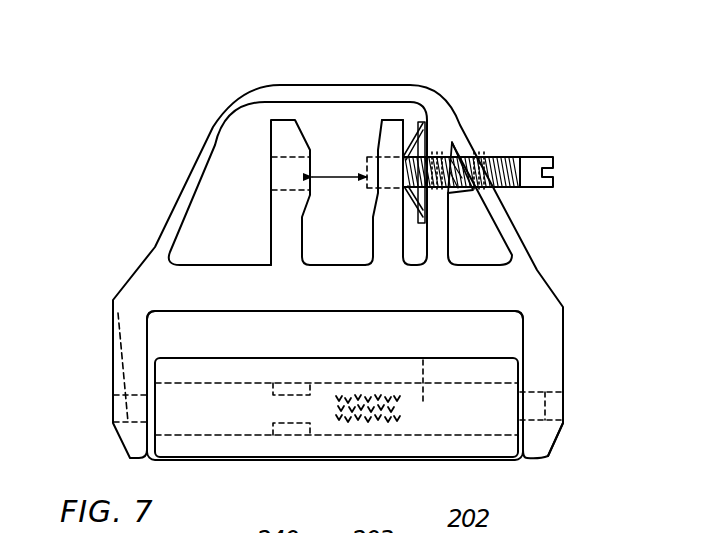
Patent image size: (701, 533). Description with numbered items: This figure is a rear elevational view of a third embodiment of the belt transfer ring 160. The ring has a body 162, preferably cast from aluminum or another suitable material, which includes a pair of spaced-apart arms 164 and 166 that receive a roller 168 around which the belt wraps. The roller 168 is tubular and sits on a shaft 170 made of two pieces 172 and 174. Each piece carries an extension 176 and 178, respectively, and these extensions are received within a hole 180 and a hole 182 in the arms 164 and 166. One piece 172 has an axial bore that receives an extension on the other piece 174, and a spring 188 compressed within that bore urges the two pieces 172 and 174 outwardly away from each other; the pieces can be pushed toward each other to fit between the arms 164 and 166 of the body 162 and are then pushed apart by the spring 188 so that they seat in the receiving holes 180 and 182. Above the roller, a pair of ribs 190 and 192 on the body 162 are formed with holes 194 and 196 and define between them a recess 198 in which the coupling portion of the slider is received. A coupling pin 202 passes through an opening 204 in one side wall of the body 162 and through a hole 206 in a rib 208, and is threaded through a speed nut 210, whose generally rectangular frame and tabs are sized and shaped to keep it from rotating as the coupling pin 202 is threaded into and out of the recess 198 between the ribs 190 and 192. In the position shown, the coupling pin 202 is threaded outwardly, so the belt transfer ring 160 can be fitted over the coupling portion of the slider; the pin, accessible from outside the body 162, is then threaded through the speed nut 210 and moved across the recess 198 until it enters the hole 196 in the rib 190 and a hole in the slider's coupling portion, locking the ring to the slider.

The belt transfer ring 160 is at (187, 131).
The body 162 is at (188, 172).
The arm 164 is at (557, 358).
The arm 166 is at (114, 375).
The roller 168 is at (315, 447).
The shaft 170 is at (478, 348).
The shaft piece 172 is at (455, 383).
The shaft piece 174 is at (203, 378).
The extension 176 is at (550, 405).
The extension 178 is at (140, 422).
The hole 180 is at (560, 427).
The hole 182 is at (108, 289).
The spring 188 is at (352, 390).
The rib 190 is at (270, 233).
The rib 192 is at (382, 232).
The hole 194 is at (365, 157).
The hole 196 is at (282, 158).
The recess 198 is at (376, 128).
The coupling pin 202 is at (543, 156).
The opening 204 is at (477, 147).
The hole 206 is at (447, 140).
The rib 208 is at (438, 233).
The speed nut 210 is at (417, 122).